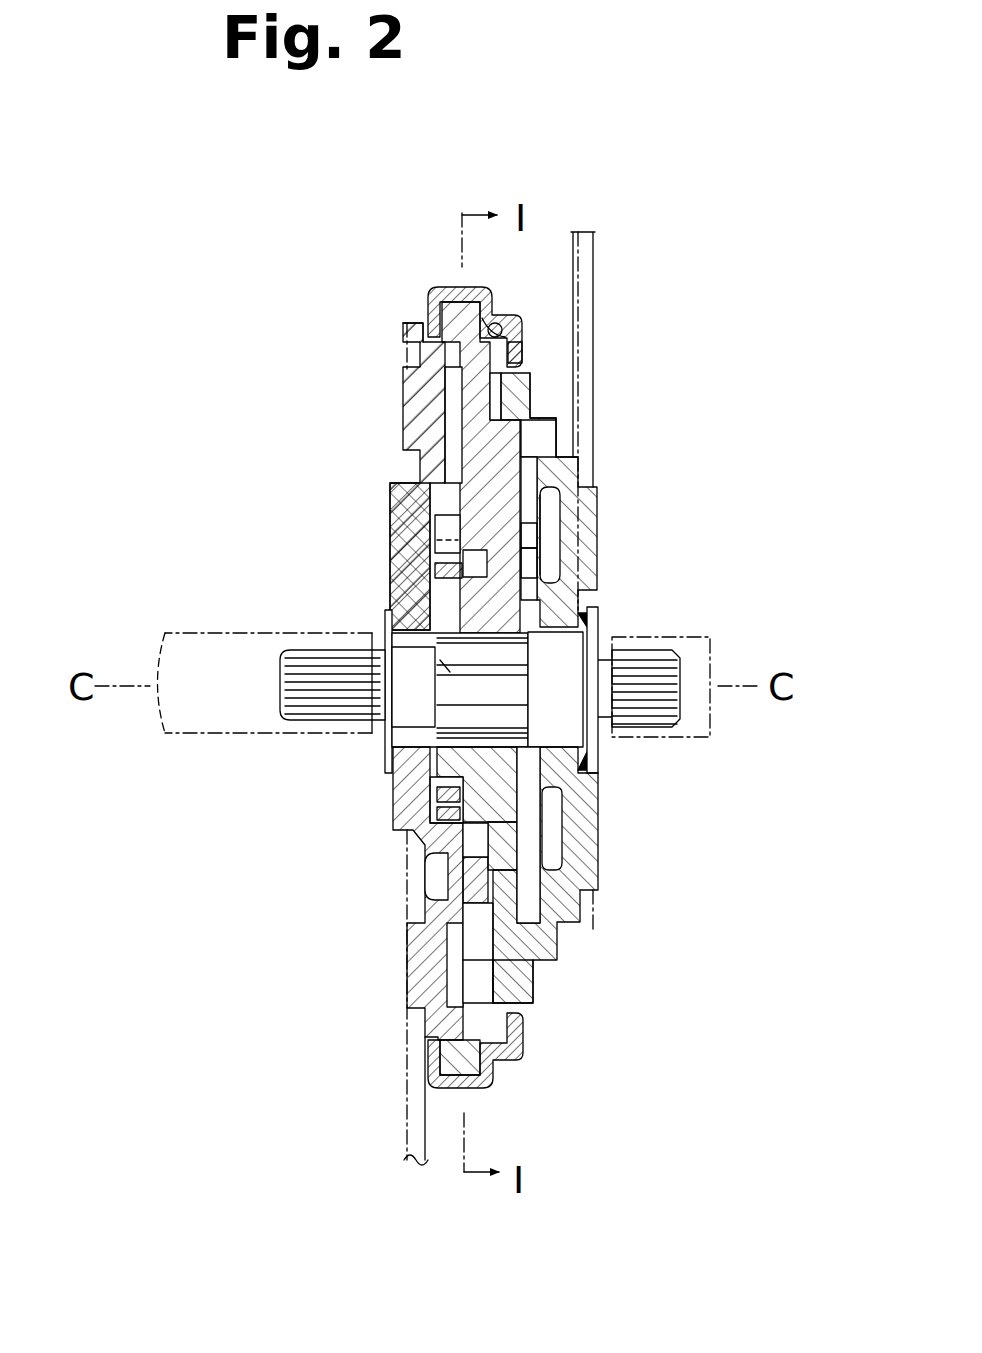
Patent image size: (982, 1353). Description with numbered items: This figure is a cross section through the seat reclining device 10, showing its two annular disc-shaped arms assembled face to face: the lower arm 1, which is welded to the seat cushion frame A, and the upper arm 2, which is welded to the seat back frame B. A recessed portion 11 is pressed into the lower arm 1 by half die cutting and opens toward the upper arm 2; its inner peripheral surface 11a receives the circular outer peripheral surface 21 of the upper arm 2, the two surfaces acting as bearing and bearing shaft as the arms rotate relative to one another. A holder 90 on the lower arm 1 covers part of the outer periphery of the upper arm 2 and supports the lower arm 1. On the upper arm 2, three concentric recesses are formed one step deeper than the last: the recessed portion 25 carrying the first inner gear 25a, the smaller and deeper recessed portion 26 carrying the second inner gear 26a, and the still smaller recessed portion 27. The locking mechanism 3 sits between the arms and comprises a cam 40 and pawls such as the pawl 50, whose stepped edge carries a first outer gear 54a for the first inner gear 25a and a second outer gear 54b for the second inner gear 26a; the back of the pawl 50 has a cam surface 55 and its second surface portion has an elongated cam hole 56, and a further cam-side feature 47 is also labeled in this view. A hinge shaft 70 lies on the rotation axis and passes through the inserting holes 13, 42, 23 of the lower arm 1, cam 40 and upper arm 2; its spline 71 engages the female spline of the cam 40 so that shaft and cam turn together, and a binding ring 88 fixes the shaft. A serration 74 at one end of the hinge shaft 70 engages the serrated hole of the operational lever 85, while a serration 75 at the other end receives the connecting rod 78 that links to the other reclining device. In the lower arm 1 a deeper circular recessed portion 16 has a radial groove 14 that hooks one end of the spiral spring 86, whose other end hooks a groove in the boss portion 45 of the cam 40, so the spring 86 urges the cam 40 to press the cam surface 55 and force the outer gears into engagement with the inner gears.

The holder 90 is at (446, 288).
The outer peripheral surface 21 is at (508, 300).
The first outer gear 54a is at (525, 332).
The second outer gear 54b is at (530, 392).
The circular recessed portion 16 is at (448, 598).
The groove 14 is at (432, 482).
The lower arm 1 is at (405, 405).
The seat reclining device 10 is at (383, 360).
The inner peripheral surface 11a is at (430, 350).
The spring 86 is at (435, 500).
The boss portion 45 is at (440, 578).
The binding ring 88 is at (385, 625).
The upper arm 2 is at (567, 470).
The locking mechanism 3 is at (555, 447).
The first pawl 50 is at (532, 421).
The cam surface 55 is at (523, 520).
The recess 47 is at (560, 548).
The cam hole 56 is at (533, 567).
The seat back frame B is at (597, 346).
The hinge shaft 70 is at (445, 688).
The spline 71 is at (350, 690).
The serration 75 is at (290, 680).
The connecting rod 78 is at (212, 633).
The serration 74 is at (650, 655).
The inserting hole 23 is at (593, 737).
The operational lever 85 is at (713, 650).
The cam 40 is at (510, 810).
The inserting hole 13 is at (450, 795).
The inserting hole 42 is at (450, 813).
The recessed portion 26 is at (407, 913).
The recessed portion 27 is at (500, 917).
The second inner gear 26a is at (478, 937).
The recessed portion 25 is at (470, 973).
The recessed portion 11 is at (530, 960).
The first inner gear 25a is at (520, 983).
The seat cushion frame A is at (412, 1125).